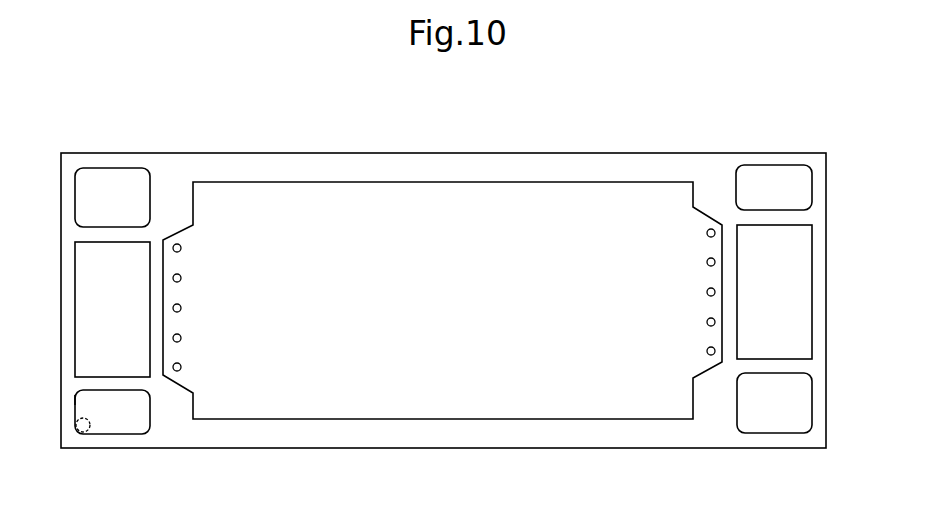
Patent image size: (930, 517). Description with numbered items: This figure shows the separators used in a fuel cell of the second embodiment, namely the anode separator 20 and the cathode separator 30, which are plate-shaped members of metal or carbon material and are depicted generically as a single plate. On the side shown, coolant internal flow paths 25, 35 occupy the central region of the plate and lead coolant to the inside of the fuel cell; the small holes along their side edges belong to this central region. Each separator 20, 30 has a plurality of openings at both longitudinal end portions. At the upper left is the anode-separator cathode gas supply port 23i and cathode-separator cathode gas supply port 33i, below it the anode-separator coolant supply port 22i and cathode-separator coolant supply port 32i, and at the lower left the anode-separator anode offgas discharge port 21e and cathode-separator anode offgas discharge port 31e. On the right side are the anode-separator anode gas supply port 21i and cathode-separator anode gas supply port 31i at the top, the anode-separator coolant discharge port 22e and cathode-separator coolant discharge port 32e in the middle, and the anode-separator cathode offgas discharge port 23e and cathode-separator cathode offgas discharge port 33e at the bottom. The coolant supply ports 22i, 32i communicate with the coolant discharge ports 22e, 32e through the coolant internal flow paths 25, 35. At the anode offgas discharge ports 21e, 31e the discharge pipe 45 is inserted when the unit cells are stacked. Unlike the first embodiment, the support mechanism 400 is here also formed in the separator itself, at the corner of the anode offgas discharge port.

The anode separator 20 is at (443, 279).
The cathode separator 30 is at (430, 165).
The coolant internal flow path 25 is at (442, 300).
The coolant internal flow path 35 is at (452, 295).
The anode-separator anode gas supply port 21i is at (723, 165).
The cathode-separator anode gas supply port 31i is at (735, 178).
The anode-separator coolant supply port 22i is at (112, 309).
The cathode-separator coolant supply port 32i is at (145, 317).
The anode-separator cathode gas supply port 23i is at (162, 175).
The cathode-separator cathode gas supply port 33i is at (150, 182).
The anode-separator anode offgas discharge port 21e is at (165, 432).
The cathode-separator anode offgas discharge port 31e is at (152, 415).
The anode-separator coolant discharge port 22e is at (774, 292).
The cathode-separator coolant discharge port 32e is at (795, 288).
The anode-separator cathode offgas discharge port 23e is at (730, 431).
The cathode-separator cathode offgas discharge port 33e is at (755, 433).
The support mechanism 400 is at (84, 414).
The discharge pipe 45 is at (90, 430).